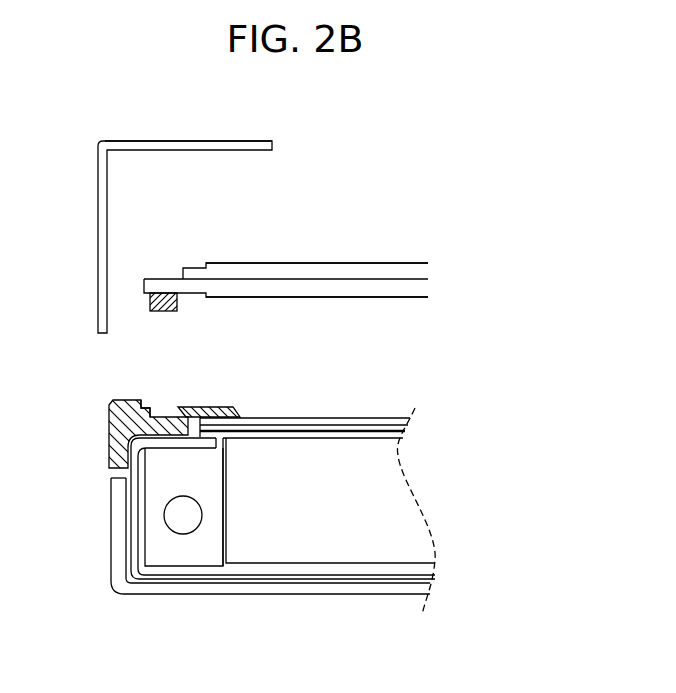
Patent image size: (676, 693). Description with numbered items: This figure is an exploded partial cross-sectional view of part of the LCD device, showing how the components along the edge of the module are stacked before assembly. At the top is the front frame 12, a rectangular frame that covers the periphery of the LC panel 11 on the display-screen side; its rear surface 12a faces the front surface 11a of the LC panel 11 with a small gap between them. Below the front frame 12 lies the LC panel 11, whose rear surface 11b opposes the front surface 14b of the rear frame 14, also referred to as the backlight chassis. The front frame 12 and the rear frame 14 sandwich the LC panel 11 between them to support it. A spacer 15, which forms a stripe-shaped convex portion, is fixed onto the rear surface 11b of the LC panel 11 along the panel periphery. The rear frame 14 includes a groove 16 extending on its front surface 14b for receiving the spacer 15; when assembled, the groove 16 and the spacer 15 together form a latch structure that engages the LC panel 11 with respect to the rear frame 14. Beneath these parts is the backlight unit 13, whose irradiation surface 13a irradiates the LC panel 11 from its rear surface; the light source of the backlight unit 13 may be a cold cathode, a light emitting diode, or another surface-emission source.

The LC panel 11 is at (434, 280).
The front surface of LC panel 11a is at (318, 263).
The rear surface of LC panel 11b is at (350, 297).
The front frame 12 is at (180, 141).
The rear surface of front frame 12a is at (213, 150).
The backlight unit 13 is at (510, 405).
The irradiation surface 13a is at (290, 417).
The rear frame 14 is at (109, 423).
The front surface of rear frame 14b is at (209, 408).
The spacer 15 is at (148, 296).
The groove 16 is at (157, 410).